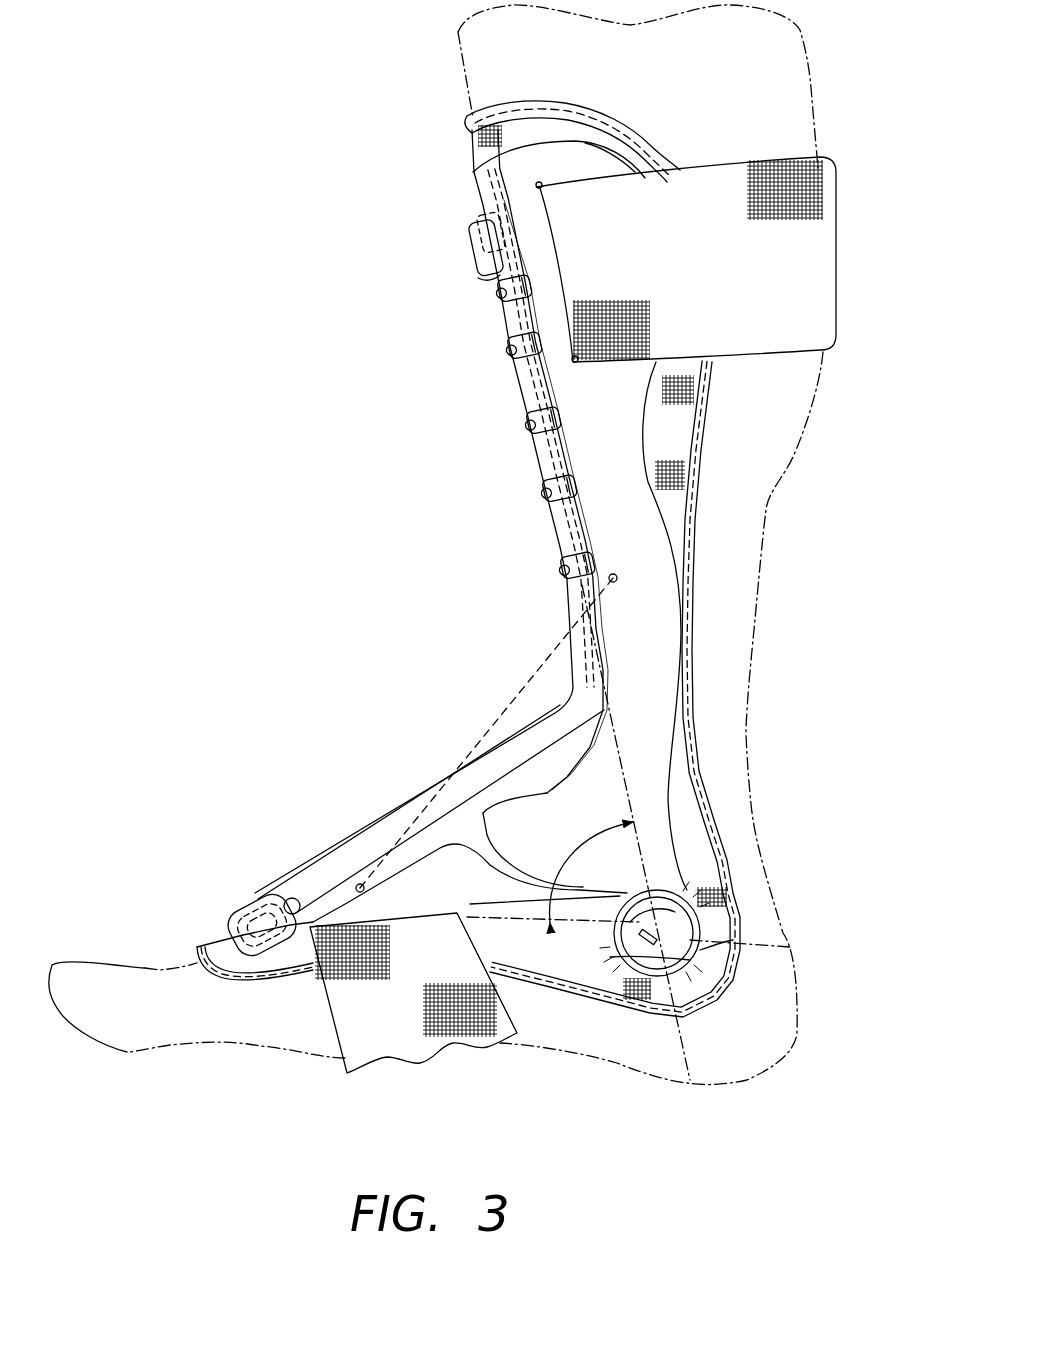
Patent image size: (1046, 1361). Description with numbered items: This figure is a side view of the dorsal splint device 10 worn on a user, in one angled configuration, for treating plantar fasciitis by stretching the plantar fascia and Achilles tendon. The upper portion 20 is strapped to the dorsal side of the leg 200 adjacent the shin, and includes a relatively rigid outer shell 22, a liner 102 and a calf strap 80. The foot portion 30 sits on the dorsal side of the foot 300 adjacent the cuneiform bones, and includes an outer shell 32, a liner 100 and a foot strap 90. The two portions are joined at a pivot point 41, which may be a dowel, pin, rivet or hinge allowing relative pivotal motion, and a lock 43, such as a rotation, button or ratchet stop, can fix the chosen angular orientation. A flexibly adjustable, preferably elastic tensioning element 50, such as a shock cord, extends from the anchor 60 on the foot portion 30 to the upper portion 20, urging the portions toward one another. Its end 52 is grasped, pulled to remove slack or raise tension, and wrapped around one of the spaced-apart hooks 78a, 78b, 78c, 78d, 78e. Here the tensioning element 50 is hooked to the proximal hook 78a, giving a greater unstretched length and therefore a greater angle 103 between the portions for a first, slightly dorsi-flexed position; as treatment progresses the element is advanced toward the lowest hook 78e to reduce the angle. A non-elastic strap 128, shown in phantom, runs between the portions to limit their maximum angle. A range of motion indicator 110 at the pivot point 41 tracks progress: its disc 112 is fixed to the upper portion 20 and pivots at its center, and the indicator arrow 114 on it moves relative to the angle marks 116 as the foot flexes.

The dorsal splint device 10 is at (283, 73).
The upper portion 20 is at (470, 173).
The outer shell 22 is at (610, 143).
The foot portion 30 is at (220, 930).
The outer shell 32 is at (335, 893).
The pivot point 41 is at (730, 950).
The lock 43 is at (657, 873).
The tensioning element 50 is at (468, 238).
The end of tensioning element 52 is at (497, 277).
The anchor 60 is at (257, 893).
The hook 78a is at (500, 300).
The hook 78b is at (510, 357).
The hook 78c is at (530, 433).
The hook 78d is at (550, 497).
The hook 78e is at (567, 577).
The calf strap 80 is at (723, 157).
The foot strap 90 is at (435, 1050).
The liner 100 is at (262, 978).
The liner 102 is at (467, 117).
The angle 103 is at (592, 840).
The range of motion indicator 110 is at (673, 943).
The disc 112 is at (697, 925).
The indicator arrow 114 is at (668, 893).
The angle marks 116 is at (617, 960).
The strap 128 is at (505, 712).
The leg 200 is at (463, 68).
The foot 300 is at (130, 1053).